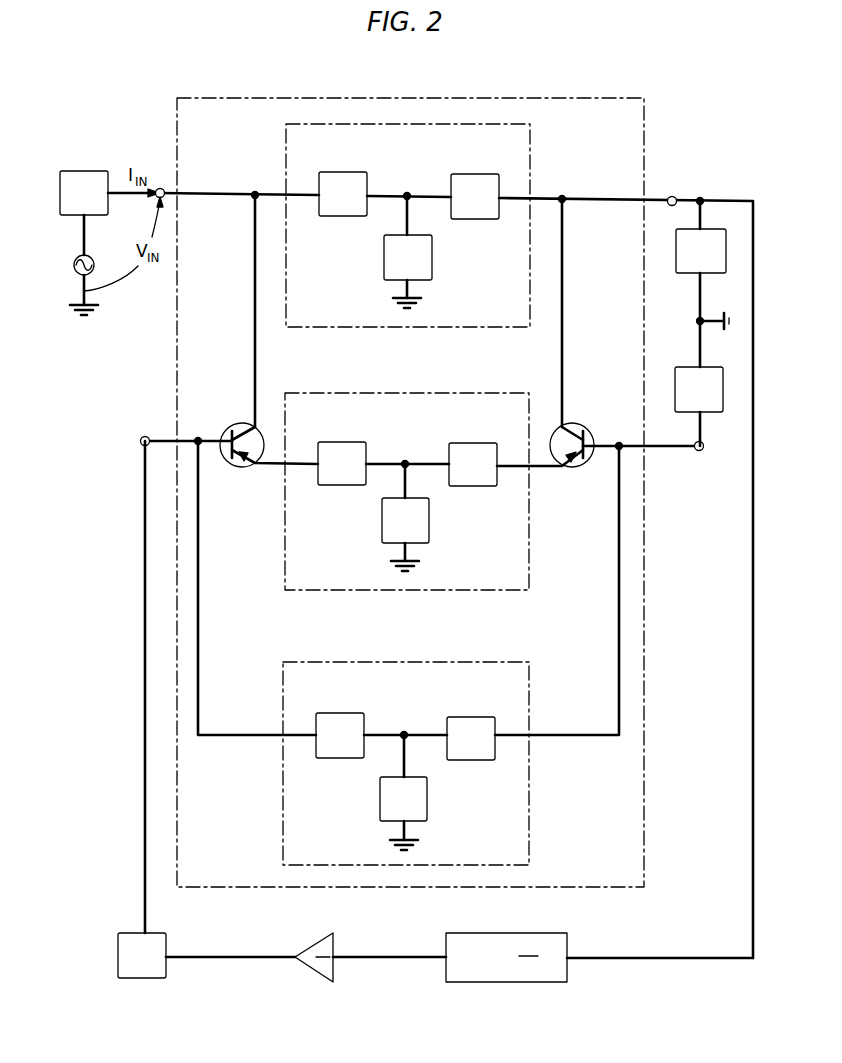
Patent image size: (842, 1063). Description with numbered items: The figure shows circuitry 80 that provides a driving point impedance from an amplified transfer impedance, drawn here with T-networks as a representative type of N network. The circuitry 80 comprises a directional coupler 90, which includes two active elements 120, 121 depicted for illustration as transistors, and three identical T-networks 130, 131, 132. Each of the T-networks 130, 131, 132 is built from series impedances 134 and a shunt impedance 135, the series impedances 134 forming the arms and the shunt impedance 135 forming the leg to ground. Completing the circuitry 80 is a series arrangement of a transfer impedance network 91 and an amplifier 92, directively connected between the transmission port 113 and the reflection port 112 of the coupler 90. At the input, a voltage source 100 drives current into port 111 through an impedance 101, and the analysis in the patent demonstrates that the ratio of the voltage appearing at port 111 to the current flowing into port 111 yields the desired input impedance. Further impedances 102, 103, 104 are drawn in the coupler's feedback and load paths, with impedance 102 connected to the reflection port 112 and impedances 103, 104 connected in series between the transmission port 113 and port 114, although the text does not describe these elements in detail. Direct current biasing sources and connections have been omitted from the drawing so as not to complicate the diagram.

The circuitry 80 is at (683, 932).
The directional coupler 90 is at (437, 106).
The transfer impedance network 91 is at (500, 975).
The amplifier 92 is at (314, 955).
The voltage source 100 is at (93, 265).
The source impedance Z_R 101 is at (88, 170).
The feedback impedance Z_R 102 is at (120, 958).
The load impedance Z_R 103 is at (690, 268).
The load impedance Z_R 104 is at (684, 368).
The port 111 is at (166, 184).
The reflection port 112 is at (150, 432).
The transmission port 113 is at (676, 192).
The terminal 114 is at (704, 456).
The active element 120 is at (269, 331).
The active element 121 is at (550, 333).
The T-network 130 is at (292, 138).
The T-network 131 is at (402, 402).
The T-network 132 is at (409, 670).
The series impedances 134 is at (342, 172).
The shunt impedance 135 is at (383, 262).